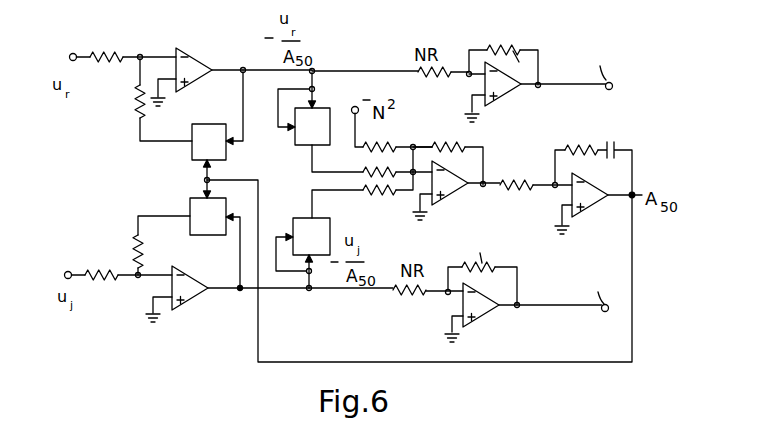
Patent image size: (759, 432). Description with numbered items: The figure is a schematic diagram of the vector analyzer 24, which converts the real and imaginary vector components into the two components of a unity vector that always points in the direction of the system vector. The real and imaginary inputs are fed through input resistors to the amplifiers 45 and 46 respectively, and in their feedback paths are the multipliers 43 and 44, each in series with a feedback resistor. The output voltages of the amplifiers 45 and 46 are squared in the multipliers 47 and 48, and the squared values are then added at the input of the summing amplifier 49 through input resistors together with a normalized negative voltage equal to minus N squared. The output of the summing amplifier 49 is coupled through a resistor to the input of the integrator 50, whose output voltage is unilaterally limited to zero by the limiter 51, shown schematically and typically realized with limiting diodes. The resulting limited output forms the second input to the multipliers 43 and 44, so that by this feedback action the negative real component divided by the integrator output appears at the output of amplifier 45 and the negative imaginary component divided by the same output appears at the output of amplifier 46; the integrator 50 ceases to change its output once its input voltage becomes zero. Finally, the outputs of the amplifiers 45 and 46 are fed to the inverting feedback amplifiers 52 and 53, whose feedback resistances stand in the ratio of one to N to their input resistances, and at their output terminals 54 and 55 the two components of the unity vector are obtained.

The vector analyzer 24 is at (376, 46).
The multiplier 43 is at (192, 150).
The multiplier 44 is at (190, 209).
The amplifier 45 is at (194, 78).
The amplifier 46 is at (186, 299).
The multiplier 47 is at (296, 143).
The multiplier 48 is at (294, 222).
The summing amplifier 49 is at (443, 194).
The integrator 50 is at (600, 174).
The limiter 51 is at (614, 216).
The inverting feedback amplifier 52 is at (501, 91).
The inverting feedback amplifier 53 is at (478, 314).
The output terminal 54 is at (618, 73).
The output terminal 55 is at (600, 311).